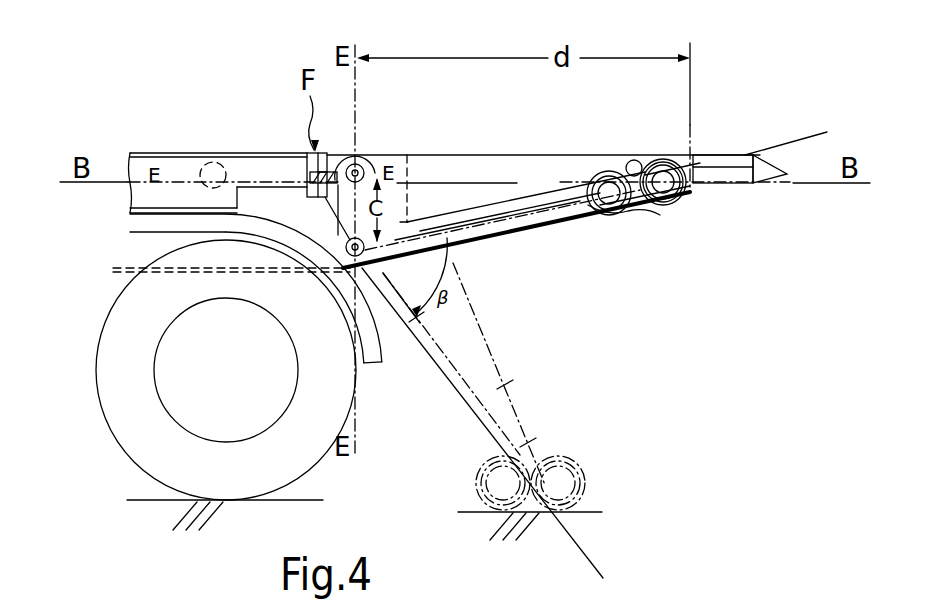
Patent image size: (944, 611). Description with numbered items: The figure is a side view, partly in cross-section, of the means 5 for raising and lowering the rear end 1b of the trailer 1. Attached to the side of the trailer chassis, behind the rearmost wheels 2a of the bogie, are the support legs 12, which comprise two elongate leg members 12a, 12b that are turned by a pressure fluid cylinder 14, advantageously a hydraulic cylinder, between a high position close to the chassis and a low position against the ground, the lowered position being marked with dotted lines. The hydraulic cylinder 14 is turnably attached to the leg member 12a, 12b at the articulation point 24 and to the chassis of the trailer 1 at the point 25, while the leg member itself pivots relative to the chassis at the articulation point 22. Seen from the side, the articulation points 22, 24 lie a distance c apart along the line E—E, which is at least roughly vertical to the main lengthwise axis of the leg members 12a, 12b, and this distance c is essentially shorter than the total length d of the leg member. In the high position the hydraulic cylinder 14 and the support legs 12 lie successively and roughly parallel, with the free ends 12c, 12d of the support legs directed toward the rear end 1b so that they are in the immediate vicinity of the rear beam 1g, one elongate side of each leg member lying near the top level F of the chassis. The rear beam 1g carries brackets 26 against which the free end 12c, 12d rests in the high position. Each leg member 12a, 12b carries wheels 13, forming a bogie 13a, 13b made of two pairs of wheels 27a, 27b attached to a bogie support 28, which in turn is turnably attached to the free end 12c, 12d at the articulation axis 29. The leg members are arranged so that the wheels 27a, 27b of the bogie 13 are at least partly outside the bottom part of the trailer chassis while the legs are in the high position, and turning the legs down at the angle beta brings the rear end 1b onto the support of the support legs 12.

The trailer 1 is at (140, 153).
The rear end of the trailer 1b is at (527, 118).
The rear beam 1g is at (730, 153).
The rearmost wheels of the bogie 2a is at (150, 445).
The means for raising and lowering the rear end of the trailer 5 is at (545, 150).
The support legs 12 is at (433, 168).
The leg member 12a is at (510, 212).
The leg member 12b is at (487, 220).
The free end of the support leg 12c is at (530, 442).
The free end of the support leg 12d is at (477, 374).
The wheels of the support legs 13 is at (647, 226).
The bogie of the leg member 13a is at (503, 483).
The bogie of the leg member 13b is at (558, 483).
The pressure fluid cylinder 14 is at (265, 152).
The articulation point of the leg member and the chassis 22 is at (335, 283).
The articulation point of the hydraulic cylinders and the leg member 24 is at (360, 167).
The attachment point of the hydraulic cylinders to the chassis 25 is at (227, 163).
The brackets 26 is at (682, 153).
The pair of wheels of the bogie 27a is at (675, 206).
The pair of wheels of the bogie 27b is at (610, 220).
The bogie support 28 is at (630, 164).
The articulation axis 29 is at (690, 196).